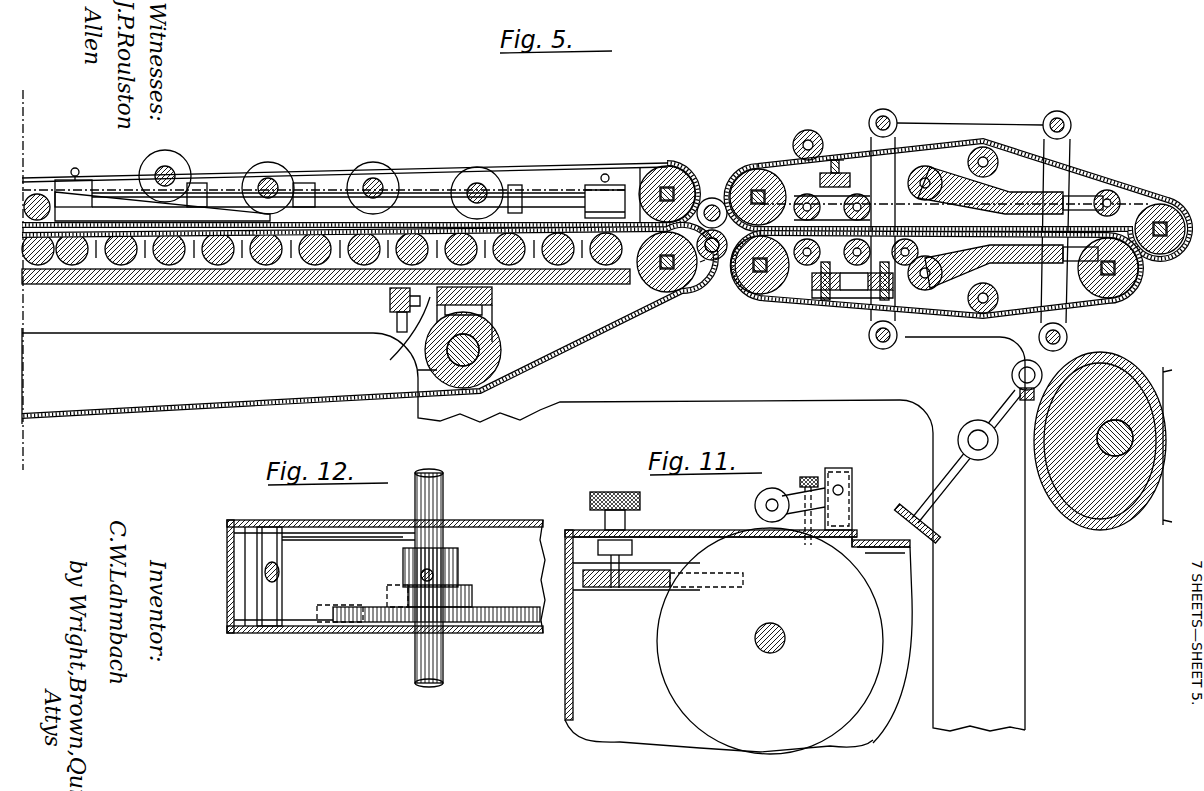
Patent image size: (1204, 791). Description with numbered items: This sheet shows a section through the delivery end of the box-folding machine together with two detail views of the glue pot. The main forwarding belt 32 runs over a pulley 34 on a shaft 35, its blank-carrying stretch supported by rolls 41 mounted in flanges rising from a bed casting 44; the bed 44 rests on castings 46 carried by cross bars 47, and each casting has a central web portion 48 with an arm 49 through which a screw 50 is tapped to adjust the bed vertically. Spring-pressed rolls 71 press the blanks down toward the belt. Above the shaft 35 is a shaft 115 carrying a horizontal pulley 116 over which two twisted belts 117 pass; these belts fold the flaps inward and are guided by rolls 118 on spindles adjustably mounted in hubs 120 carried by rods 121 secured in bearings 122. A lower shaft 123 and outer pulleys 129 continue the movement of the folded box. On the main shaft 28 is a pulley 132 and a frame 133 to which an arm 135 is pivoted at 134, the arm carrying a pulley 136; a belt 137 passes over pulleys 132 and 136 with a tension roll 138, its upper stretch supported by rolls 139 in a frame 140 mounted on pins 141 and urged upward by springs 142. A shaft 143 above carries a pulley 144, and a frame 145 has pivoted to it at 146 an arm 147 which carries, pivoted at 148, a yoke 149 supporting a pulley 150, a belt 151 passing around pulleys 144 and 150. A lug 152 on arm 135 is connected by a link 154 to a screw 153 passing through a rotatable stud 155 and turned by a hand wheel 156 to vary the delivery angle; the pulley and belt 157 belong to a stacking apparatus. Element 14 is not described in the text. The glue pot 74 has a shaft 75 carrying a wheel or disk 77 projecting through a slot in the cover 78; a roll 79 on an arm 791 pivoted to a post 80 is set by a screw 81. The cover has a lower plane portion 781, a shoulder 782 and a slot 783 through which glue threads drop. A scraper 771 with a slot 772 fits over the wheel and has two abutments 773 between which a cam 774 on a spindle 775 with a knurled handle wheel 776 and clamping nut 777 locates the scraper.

In FIG. 5, the lower belt 14 is at (910, 291).
In FIG. 5, the shaft 28 is at (746, 293).
In FIG. 5, the main forwarding belt 32 is at (290, 285).
In FIG. 5, the pulley 34 is at (687, 292).
In FIG. 5, the shaft 35 is at (656, 285).
In FIG. 5, the rolls 41 is at (238, 268).
In FIG. 5, the bed casting 44 is at (350, 285).
In FIG. 5, the castings 46 is at (493, 316).
In FIG. 5, the cross bars 47 is at (501, 350).
In FIG. 5, the central web portions 48 is at (493, 296).
In FIG. 5, the arm 49 is at (392, 358).
In FIG. 5, the screw 50 is at (398, 323).
In FIG. 5, the rolls 71 is at (40, 194).
In FIG. 11, the glue pot 74 is at (738, 641).
In FIG. 12, the glue pot 74 is at (228, 530).
In FIG. 11, the shaft 75 is at (760, 650).
In FIG. 12, the shaft 75 is at (425, 662).
In FIG. 11, the wheel or disk 77 is at (706, 708).
In FIG. 12, the wheel or disk 77 is at (385, 618).
In FIG. 11, the cover 78 is at (684, 529).
In FIG. 11, the roll 79 is at (754, 505).
In FIG. 11, the post 80 is at (853, 470).
In FIG. 11, the screw 81 is at (800, 538).
In FIG. 5, the shaft 115 is at (660, 185).
In FIG. 5, the pulley 116 is at (672, 186).
In FIG. 5, the belts 117 is at (82, 286).
In FIG. 5, the rolls 118 is at (185, 170).
In FIG. 5, the hubs 120 is at (278, 172).
In FIG. 5, the rods 121 is at (332, 192).
In FIG. 5, the bearings 122 is at (598, 203).
In FIG. 5, the lower shaft 123 is at (713, 262).
In FIG. 5, the outer pulleys 129 is at (713, 198).
In FIG. 5, the pulley 132 is at (768, 296).
In FIG. 5, the frame 133 is at (855, 293).
In FIG. 5, the pivot 134 is at (955, 284).
In FIG. 5, the arm 135 is at (996, 293).
In FIG. 5, the pulley 136 is at (1110, 300).
In FIG. 5, the belt 137 is at (891, 345).
In FIG. 5, the tension roll 138 is at (1040, 341).
In FIG. 5, the rolls 139 is at (880, 232).
In FIG. 5, the frame 140 is at (856, 229).
In FIG. 5, the pins 141 is at (826, 302).
In FIG. 5, the springs 142 is at (880, 268).
In FIG. 5, the shaft 143 is at (762, 168).
In FIG. 5, the pulley 144 is at (800, 137).
In FIG. 5, the frame 145 is at (840, 172).
In FIG. 5, the pivot 146 is at (930, 170).
In FIG. 5, the arm 147 is at (995, 158).
In FIG. 5, the pivot 148 is at (1109, 190).
In FIG. 5, the yoke 149 is at (1140, 197).
In FIG. 5, the pulley 150 is at (1163, 206).
In FIG. 5, the belt 151 is at (1078, 150).
In FIG. 5, the lug 152 is at (1078, 264).
In FIG. 5, the screw 153 is at (1010, 392).
In FIG. 5, the link 154 is at (1093, 359).
In FIG. 5, the rotatable stud 155 is at (975, 462).
In FIG. 5, the hand wheel 156 is at (942, 540).
In FIG. 5, the pulley and belt 157 is at (1080, 528).
In FIG. 12, the scraper 771 is at (395, 538).
In FIG. 12, the slot 772 is at (455, 567).
In FIG. 12, the abutments 773 is at (282, 594).
In FIG. 11, the cam 774 is at (610, 590).
In FIG. 12, the cam 774 is at (282, 566).
In FIG. 11, the spindle 775 is at (625, 562).
In FIG. 12, the spindle 775 is at (282, 579).
In FIG. 11, the knurled handle wheel 776 is at (602, 484).
In FIG. 11, the nut 777 is at (598, 522).
In FIG. 11, the lower plane portion of cover 781 is at (892, 556).
In FIG. 11, the shoulder 782 is at (857, 533).
In FIG. 11, the slot 783 is at (873, 553).
In FIG. 11, the arm 791 is at (792, 480).